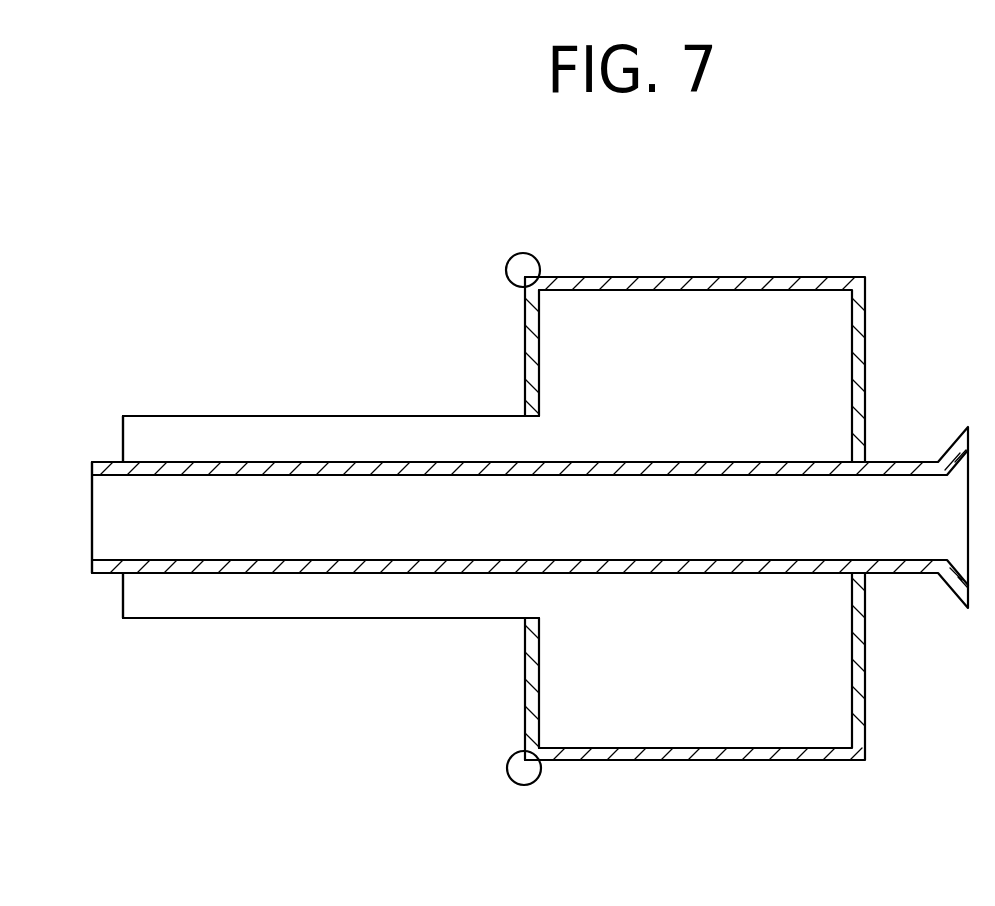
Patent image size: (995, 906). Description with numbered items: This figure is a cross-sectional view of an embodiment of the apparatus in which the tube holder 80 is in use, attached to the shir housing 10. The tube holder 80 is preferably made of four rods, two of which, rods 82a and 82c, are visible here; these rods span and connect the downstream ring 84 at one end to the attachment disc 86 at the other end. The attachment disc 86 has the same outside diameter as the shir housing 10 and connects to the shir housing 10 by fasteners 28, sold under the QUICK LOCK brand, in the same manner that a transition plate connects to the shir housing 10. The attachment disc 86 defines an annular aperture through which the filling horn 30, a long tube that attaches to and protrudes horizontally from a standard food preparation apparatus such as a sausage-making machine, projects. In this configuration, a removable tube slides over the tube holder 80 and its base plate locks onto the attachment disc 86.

The shir housing 10 is at (667, 476).
The fasteners 28 is at (507, 262).
The filling horn 30 is at (890, 490).
The tube holder 80 is at (300, 505).
The rod 82a is at (193, 416).
The rod 82c is at (235, 618).
The downstream ring 84 is at (123, 440).
The attachment disc 86 is at (522, 362).